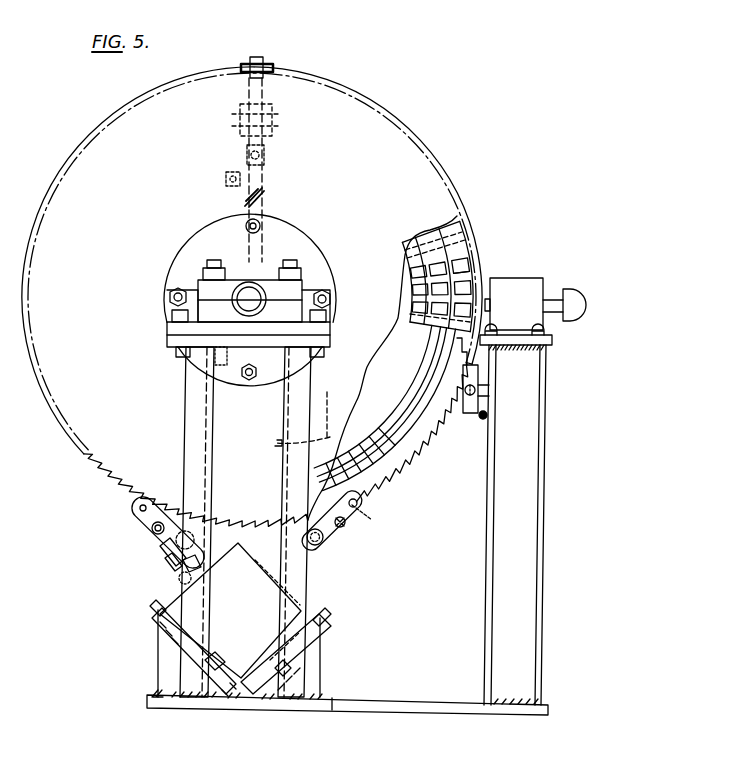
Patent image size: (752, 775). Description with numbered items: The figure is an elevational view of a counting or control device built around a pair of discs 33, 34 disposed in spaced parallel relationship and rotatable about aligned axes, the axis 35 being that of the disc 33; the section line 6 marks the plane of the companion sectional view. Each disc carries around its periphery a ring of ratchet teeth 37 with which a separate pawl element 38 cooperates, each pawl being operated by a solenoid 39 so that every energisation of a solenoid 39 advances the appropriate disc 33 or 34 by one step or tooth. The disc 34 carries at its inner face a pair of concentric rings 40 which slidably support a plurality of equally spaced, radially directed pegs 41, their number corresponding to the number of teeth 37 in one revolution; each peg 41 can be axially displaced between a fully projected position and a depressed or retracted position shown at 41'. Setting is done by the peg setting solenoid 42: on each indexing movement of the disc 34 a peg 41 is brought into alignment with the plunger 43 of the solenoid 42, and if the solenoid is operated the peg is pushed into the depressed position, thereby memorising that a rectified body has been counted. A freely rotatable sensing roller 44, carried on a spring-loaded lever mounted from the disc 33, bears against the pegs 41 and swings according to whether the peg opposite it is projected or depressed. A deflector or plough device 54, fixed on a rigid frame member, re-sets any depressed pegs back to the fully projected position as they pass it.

The section line 6- 6 is at (257, 20).
The disc 33 is at (405, 160).
The disc 34 is at (384, 488).
The axis 35 is at (248, 293).
The ratchet teeth 37 is at (128, 490).
The pawl element 38 is at (148, 517).
The solenoid 39 is at (259, 617).
The concentric rings 40 is at (373, 498).
The pegs 41 is at (479, 253).
The depressed or retracted position 41' is at (414, 276).
The peg setting solenoid 42 is at (530, 283).
The plunger 43 is at (489, 301).
The sensing roller 44 is at (276, 69).
The deflector or plough device 54 is at (309, 412).